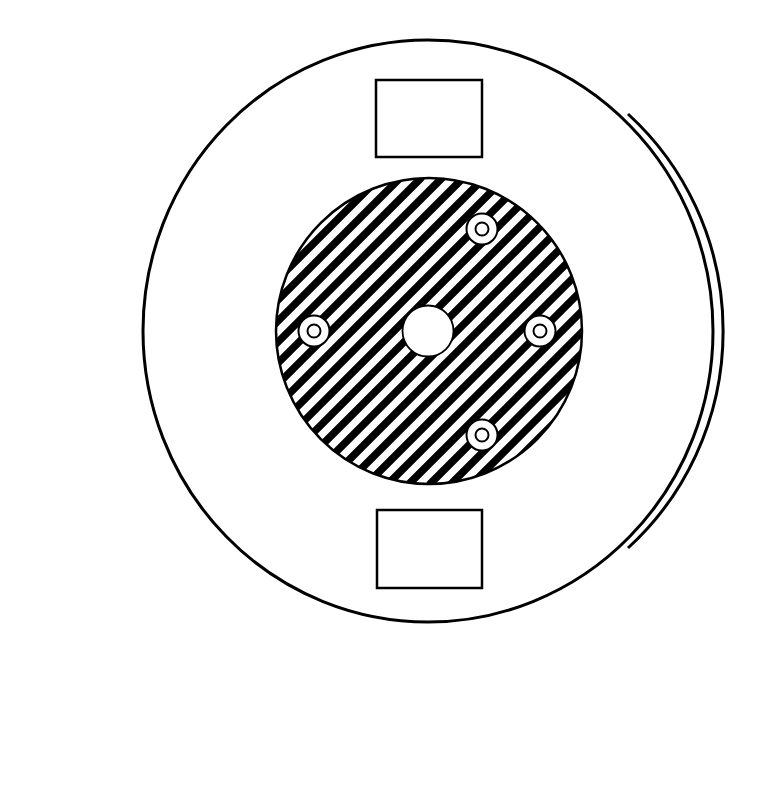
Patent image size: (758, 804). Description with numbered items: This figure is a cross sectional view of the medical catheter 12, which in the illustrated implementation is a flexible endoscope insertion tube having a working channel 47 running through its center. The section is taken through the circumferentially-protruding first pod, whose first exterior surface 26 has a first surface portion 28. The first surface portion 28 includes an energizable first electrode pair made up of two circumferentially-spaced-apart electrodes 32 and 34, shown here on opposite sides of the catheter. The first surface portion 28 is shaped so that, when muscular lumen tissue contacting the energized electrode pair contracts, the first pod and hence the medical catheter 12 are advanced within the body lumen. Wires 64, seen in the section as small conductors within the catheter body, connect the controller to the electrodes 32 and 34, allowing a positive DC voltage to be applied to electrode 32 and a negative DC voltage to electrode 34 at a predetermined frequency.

The medical catheter 12 is at (632, 117).
The first exterior surface 26 is at (174, 280).
The first surface portion 28 is at (684, 228).
The electrode 32 is at (445, 131).
The electrode 34 is at (445, 561).
The working channel 47 is at (422, 318).
The wires 64 is at (482, 229).